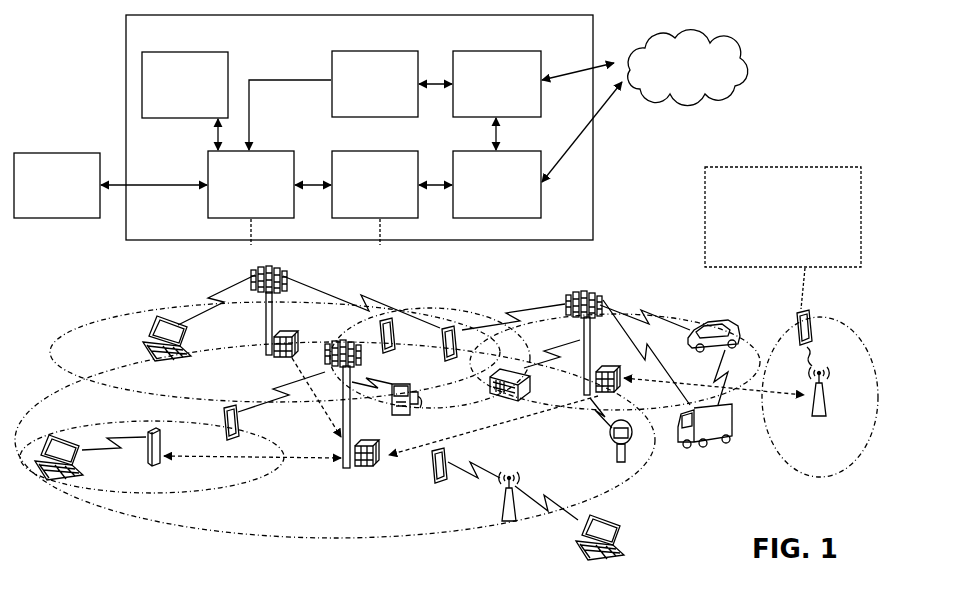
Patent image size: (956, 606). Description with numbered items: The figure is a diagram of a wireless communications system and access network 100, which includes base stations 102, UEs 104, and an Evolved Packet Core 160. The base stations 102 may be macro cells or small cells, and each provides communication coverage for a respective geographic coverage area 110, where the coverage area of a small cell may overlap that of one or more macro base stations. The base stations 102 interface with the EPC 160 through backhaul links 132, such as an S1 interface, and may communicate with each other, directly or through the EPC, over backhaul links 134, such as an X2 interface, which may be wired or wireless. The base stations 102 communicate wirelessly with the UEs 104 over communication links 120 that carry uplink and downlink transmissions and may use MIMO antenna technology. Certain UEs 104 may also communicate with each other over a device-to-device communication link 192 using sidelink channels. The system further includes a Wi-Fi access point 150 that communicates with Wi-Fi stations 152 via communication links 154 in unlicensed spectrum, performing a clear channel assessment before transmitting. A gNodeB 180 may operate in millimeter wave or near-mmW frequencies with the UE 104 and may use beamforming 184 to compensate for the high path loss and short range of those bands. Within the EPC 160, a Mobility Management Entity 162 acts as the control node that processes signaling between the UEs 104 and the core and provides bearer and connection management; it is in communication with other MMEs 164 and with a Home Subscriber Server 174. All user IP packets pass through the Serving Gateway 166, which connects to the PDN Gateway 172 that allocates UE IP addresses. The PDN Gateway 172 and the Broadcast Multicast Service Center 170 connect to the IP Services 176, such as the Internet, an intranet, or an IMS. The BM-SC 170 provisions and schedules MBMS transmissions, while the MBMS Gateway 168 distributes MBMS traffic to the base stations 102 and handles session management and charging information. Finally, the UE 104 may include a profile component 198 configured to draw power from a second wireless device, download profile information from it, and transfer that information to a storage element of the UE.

The wireless communications system and access network 100 is at (68, 53).
The base station 102 is at (266, 345).
The UE 104 is at (175, 360).
The geographic coverage area 110 is at (86, 388).
The communication link 120 is at (219, 297).
The backhaul link 132 is at (253, 244).
The backhaul link 134 is at (322, 413).
The Wi-Fi access point 150 is at (508, 521).
The Wi-Fi station 152 is at (428, 472).
The communication link 154 is at (476, 468).
The Evolved Packet Core 160 is at (267, 54).
The Mobility Management Entity 162 is at (269, 151).
The other MMEs 164 is at (180, 52).
The Serving Gateway 166 is at (392, 151).
The MBMS Gateway 168 is at (368, 51).
The Broadcast Multicast Service Center 170 is at (526, 51).
The PDN Gateway 172 is at (524, 150).
The Home Subscriber Server 174 is at (82, 153).
The IP Services 176 is at (712, 36).
The gNodeB 180 is at (833, 402).
The beamforming 184 is at (815, 354).
The device-to-device communication link 192 is at (396, 346).
The profile component 198 is at (816, 167).